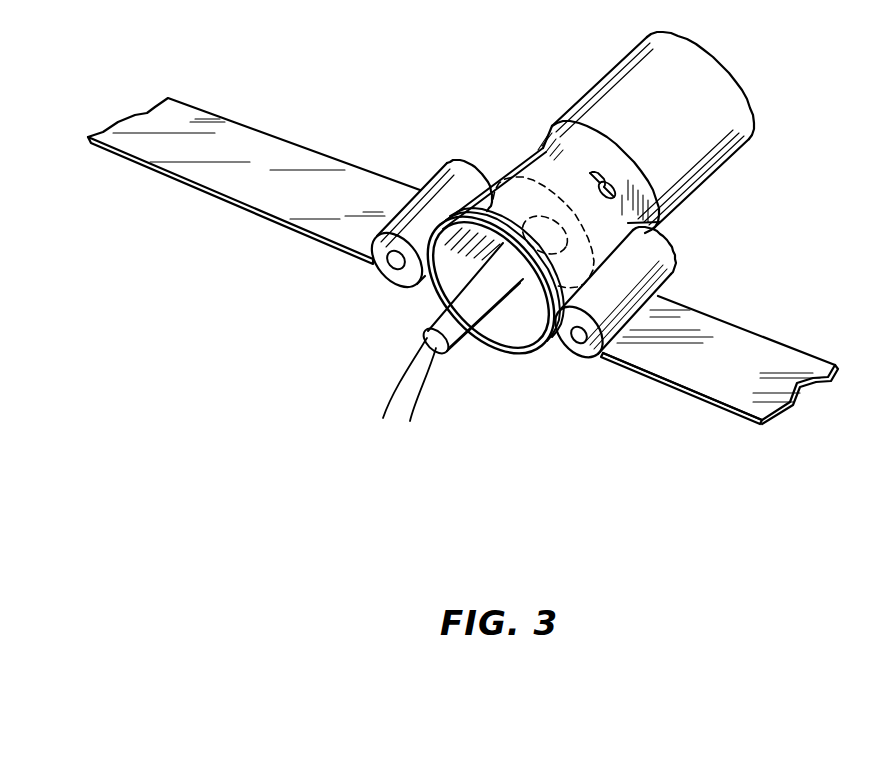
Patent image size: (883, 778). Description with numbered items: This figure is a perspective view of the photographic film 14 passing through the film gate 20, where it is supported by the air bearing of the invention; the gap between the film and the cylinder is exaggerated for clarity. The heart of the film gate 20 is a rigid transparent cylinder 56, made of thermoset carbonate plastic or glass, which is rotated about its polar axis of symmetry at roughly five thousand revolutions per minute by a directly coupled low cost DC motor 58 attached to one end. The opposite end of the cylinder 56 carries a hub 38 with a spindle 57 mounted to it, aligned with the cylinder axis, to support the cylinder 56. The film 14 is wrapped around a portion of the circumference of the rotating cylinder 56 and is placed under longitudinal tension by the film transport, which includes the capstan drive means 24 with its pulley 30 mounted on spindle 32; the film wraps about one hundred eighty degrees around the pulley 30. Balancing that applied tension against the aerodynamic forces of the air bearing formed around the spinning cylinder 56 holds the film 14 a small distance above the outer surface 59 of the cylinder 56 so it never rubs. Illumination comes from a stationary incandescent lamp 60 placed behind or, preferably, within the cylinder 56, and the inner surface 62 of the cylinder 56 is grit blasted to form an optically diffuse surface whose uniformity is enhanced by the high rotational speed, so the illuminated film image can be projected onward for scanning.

The photographic film 14 is at (785, 348).
The film gate 20 is at (520, 354).
The capstan drive means 24 is at (395, 274).
The pulley 30 is at (660, 257).
The spindle 32 is at (580, 345).
The spindle 38 is at (388, 264).
The rigid transparent cylinder 56 is at (658, 222).
The spindle 57 is at (590, 172).
The DC motor 58 is at (623, 92).
The outer surface 59 is at (555, 323).
The incandescent lamp 60 is at (473, 320).
The inner surface 62 is at (432, 298).